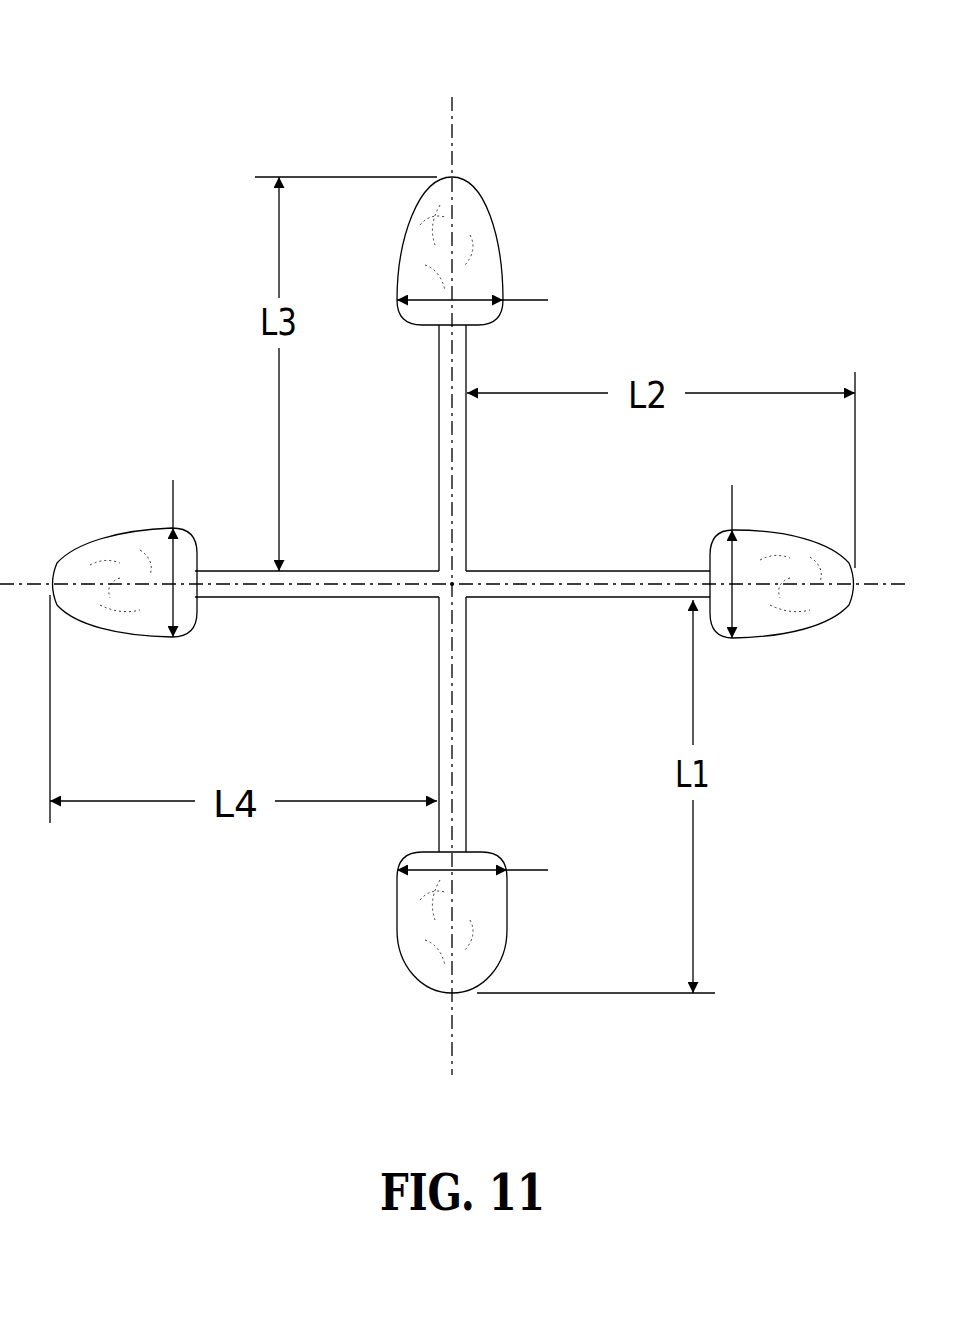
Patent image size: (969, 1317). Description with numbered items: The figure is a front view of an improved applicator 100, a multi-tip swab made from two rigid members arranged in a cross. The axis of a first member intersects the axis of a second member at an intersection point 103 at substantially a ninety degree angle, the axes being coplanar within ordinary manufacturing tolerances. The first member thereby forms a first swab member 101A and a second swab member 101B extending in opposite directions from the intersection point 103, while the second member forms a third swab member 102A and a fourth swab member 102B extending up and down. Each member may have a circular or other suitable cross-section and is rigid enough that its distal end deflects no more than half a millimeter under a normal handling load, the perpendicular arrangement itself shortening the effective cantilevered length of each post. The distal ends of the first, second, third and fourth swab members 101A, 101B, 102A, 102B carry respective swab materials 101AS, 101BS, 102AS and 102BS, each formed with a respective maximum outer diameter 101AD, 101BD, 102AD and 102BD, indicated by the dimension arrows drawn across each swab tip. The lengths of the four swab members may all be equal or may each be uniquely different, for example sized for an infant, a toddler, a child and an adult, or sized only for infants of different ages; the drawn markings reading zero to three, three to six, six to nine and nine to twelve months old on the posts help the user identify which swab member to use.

The improved applicator 100 is at (210, 127).
The first swab member 101A is at (580, 603).
The swab material of the first swab member 101AS is at (803, 592).
The diameter of the swab material of the first swab member 101AD is at (755, 541).
The second swab member 101B is at (283, 600).
The swab material of the second swab member 101BS is at (95, 602).
The diameter of the swab material of the second swab member 101BD is at (186, 537).
The third swab member 102A is at (435, 445).
The swab material of the third swab member 102AS is at (460, 212).
The diameter of the swab material of the third swab member 102AD is at (528, 301).
The fourth swab member 102B is at (437, 776).
The swab material of the fourth swab member 102BS is at (466, 956).
The diameter of the swab material of the fourth swab member 102BD is at (529, 870).
The intersection point 103 is at (456, 580).